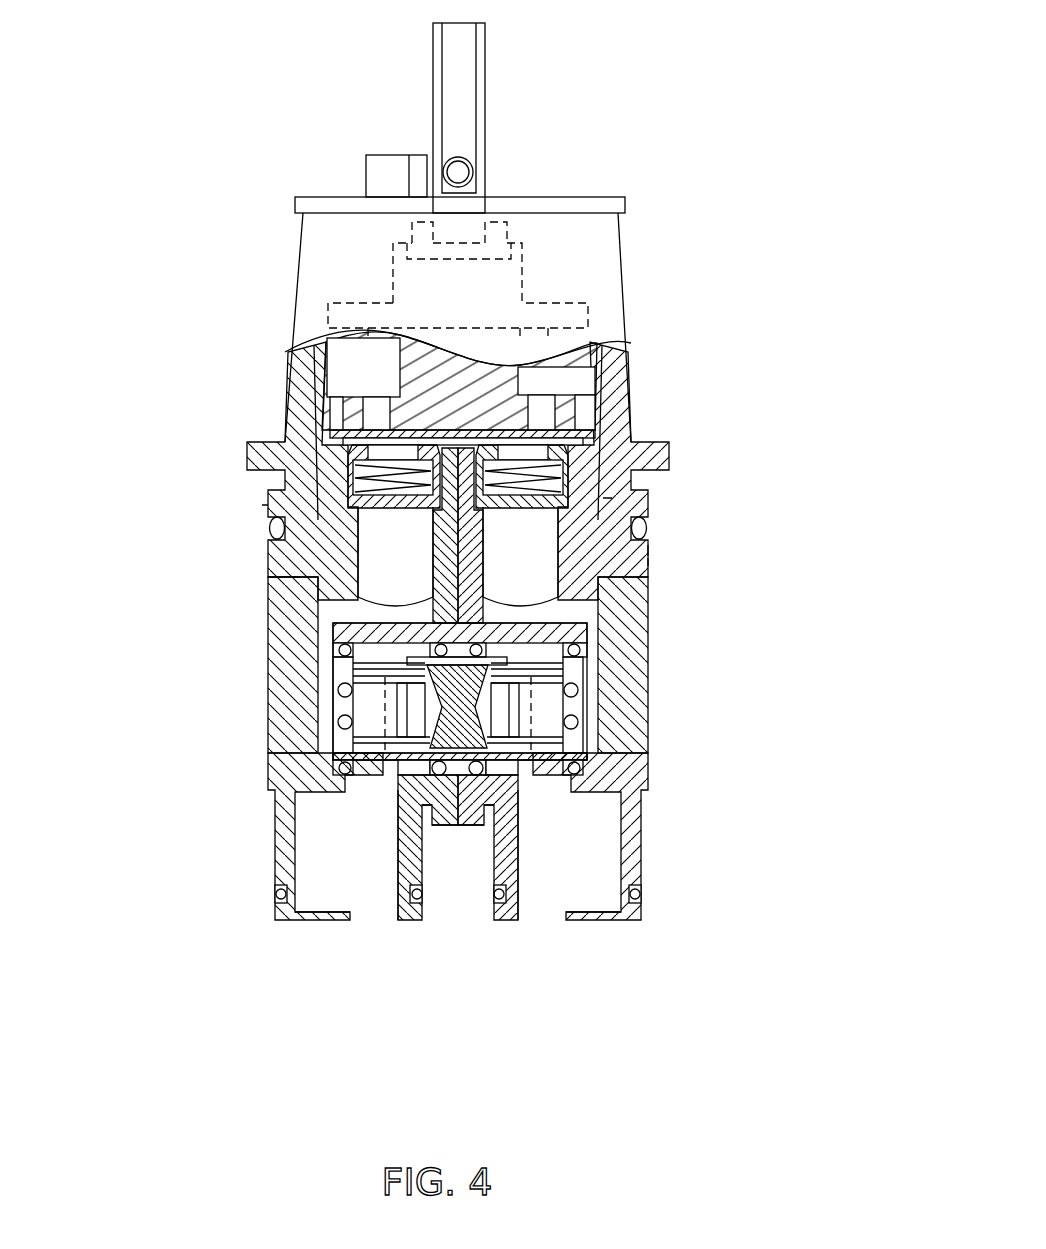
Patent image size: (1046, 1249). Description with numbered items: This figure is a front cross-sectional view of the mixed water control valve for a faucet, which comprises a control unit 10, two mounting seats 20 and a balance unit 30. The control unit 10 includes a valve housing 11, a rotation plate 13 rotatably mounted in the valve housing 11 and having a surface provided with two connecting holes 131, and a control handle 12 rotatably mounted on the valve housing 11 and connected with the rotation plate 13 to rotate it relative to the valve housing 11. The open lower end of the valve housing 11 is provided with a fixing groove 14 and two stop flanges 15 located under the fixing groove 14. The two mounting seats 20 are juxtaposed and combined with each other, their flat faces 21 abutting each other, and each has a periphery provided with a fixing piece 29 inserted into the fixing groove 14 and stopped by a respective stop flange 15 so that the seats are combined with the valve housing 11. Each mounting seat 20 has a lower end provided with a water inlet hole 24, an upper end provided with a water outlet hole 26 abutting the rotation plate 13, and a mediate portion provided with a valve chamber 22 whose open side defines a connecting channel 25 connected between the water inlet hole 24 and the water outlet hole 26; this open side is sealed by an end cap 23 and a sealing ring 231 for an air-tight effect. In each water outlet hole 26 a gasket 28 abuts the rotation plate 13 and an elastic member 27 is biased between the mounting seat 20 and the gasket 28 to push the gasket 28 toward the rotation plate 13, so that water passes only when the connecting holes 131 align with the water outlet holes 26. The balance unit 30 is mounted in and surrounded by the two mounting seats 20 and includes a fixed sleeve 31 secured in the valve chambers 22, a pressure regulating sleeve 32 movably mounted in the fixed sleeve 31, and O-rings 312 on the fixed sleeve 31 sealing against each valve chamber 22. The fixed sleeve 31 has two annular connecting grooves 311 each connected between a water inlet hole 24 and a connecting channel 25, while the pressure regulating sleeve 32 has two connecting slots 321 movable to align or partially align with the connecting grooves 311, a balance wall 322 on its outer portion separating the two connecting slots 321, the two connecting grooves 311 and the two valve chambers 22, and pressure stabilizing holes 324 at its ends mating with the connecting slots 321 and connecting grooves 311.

The control unit 10 is at (630, 258).
The valve housing 11 is at (312, 267).
The control handle 12 is at (485, 113).
The rotation plate 13 is at (400, 437).
The connecting holes 131 is at (535, 435).
The fixing groove 14 is at (650, 550).
The stop flanges 15 is at (652, 562).
The mounting seats 20 is at (268, 797).
The flat face 21 is at (457, 465).
The valve chamber 22 is at (540, 705).
The end cap 23 is at (282, 666).
The sealing ring 231 is at (267, 588).
The water inlet hole 24 is at (345, 903).
The connecting channel 25 is at (337, 630).
The water outlet hole 26 is at (390, 567).
The elastic members 27 is at (262, 505).
The gaskets 28 is at (348, 455).
The fixing piece 29 is at (648, 525).
The balance unit 30 is at (322, 703).
The fixed sleeve 31 is at (650, 767).
The connecting grooves 311 is at (400, 785).
The O-rings 312 is at (593, 626).
The pressure regulating sleeve 32 is at (548, 680).
The connecting slots 321 is at (495, 800).
The balance wall 322 is at (456, 812).
The pressure stabilizing holes 324 is at (395, 735).